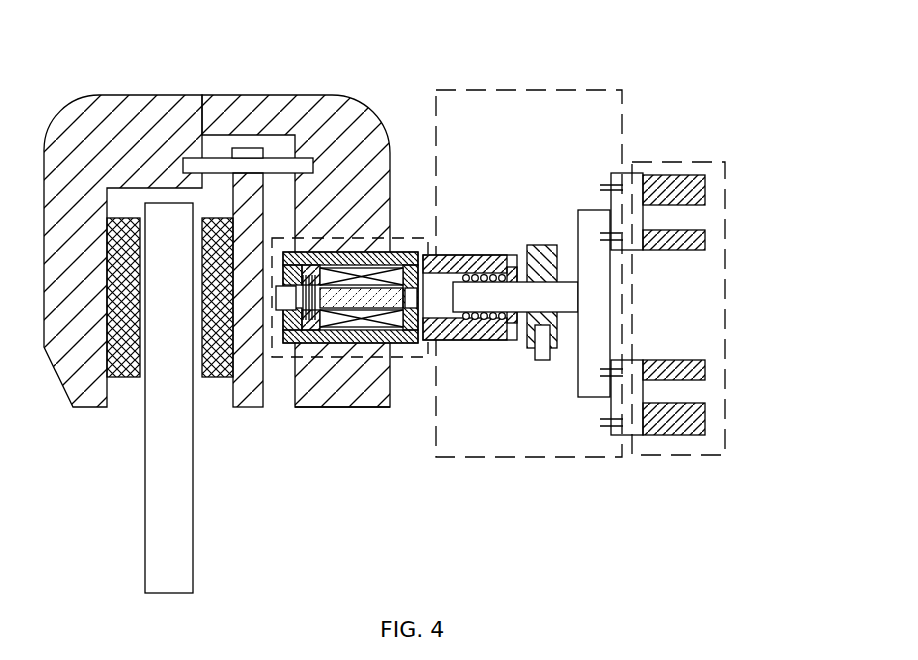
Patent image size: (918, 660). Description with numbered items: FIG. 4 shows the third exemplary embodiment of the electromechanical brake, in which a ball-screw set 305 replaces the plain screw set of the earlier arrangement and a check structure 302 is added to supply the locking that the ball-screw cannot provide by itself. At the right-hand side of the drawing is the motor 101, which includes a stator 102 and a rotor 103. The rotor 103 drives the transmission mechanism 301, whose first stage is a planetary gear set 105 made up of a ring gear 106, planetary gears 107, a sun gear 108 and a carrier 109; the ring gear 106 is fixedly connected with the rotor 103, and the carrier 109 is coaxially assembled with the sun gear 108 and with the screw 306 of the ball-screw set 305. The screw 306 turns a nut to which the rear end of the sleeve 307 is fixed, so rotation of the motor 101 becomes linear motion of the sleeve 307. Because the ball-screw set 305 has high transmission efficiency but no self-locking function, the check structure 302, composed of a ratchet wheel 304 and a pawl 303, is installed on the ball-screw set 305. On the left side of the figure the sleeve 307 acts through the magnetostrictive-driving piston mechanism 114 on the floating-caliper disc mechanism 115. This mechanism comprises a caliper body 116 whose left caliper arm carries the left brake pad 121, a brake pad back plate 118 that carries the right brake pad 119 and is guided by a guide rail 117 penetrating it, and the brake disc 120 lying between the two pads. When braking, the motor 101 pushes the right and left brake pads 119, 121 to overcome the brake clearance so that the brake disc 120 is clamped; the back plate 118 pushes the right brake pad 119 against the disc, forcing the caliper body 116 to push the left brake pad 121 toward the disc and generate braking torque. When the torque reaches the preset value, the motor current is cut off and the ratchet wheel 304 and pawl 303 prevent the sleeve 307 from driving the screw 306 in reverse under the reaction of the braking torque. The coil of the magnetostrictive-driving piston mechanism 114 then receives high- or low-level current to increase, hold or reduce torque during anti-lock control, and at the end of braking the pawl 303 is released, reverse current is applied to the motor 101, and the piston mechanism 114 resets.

The motor 101 is at (642, 162).
The stator 102 is at (697, 230).
The rotor 103 is at (677, 183).
The planetary gear set 105 is at (615, 393).
The ring gear 106 is at (602, 181).
The planetary gear 107 is at (608, 205).
The sun gear 108 is at (600, 235).
The carrier 109 is at (578, 258).
The magnetostrictive-driving piston mechanism 114 is at (398, 362).
The floating-caliper disc mechanism 115 is at (385, 123).
The caliper body 116 is at (325, 138).
The guide rail 117 is at (226, 165).
The brake pad back plate 118 is at (252, 390).
The right brake pad 119 is at (220, 380).
The brake disc 120 is at (153, 400).
The left brake pad 121 is at (120, 372).
The transmission mechanism 301 is at (627, 102).
The check structure 302 is at (562, 337).
The pawl 303 is at (542, 347).
The ratchet wheel 304 is at (533, 320).
The ball-screw set 305 is at (497, 252).
The screw 306 is at (477, 297).
The sleeve 307 is at (440, 337).